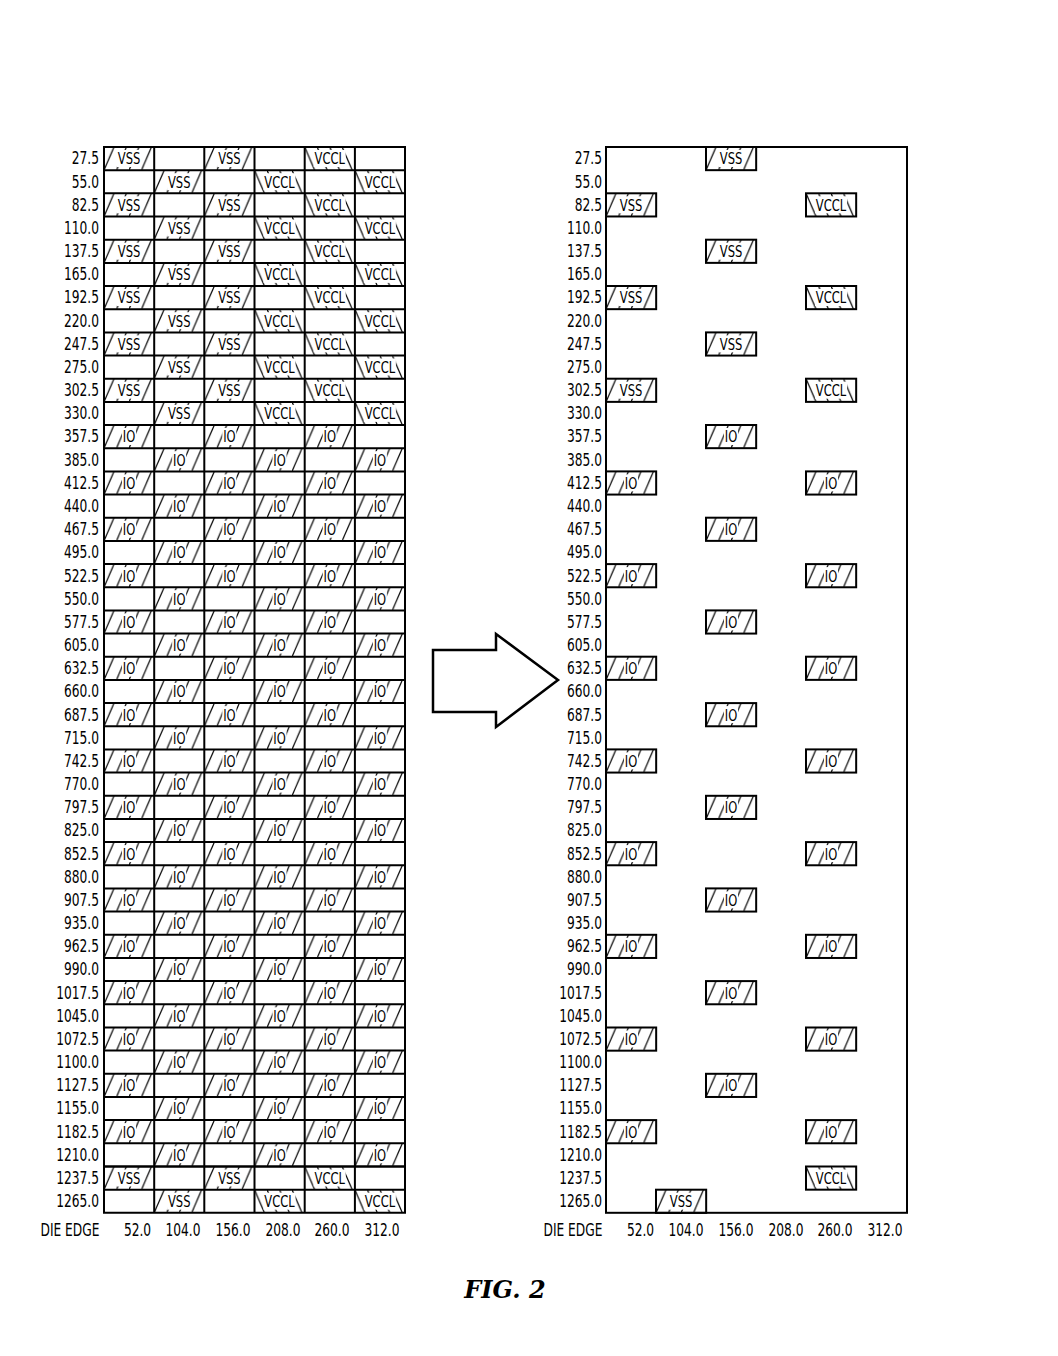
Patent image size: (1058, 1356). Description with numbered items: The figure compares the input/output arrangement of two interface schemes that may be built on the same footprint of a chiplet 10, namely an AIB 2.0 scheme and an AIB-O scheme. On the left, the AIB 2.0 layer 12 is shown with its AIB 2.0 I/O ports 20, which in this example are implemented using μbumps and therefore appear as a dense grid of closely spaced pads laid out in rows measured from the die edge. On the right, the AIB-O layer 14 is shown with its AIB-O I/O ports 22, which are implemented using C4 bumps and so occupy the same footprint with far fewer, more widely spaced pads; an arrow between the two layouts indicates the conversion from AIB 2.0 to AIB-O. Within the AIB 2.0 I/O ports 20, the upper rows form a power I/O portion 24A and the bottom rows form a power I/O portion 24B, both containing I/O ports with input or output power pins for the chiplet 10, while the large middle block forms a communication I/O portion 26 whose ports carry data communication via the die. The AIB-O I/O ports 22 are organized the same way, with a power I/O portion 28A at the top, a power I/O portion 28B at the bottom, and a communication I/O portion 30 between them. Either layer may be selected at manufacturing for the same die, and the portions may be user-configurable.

The chiplet 10 is at (881, 40).
The AIB 2.0 layer 12 is at (311, 90).
The AIB-O layer 14 is at (811, 90).
The AIB 2.0 I/O ports 20 is at (337, 127).
The AIB-O I/O ports 22 is at (839, 128).
The power I/O portion 24A is at (412, 147).
The power I/O portion 24B is at (413, 1166).
The communication I/O portion 26 is at (413, 425).
The power I/O portion 28A is at (914, 147).
The power I/O portion 28B is at (915, 1166).
The communication I/O portion 30 is at (915, 425).